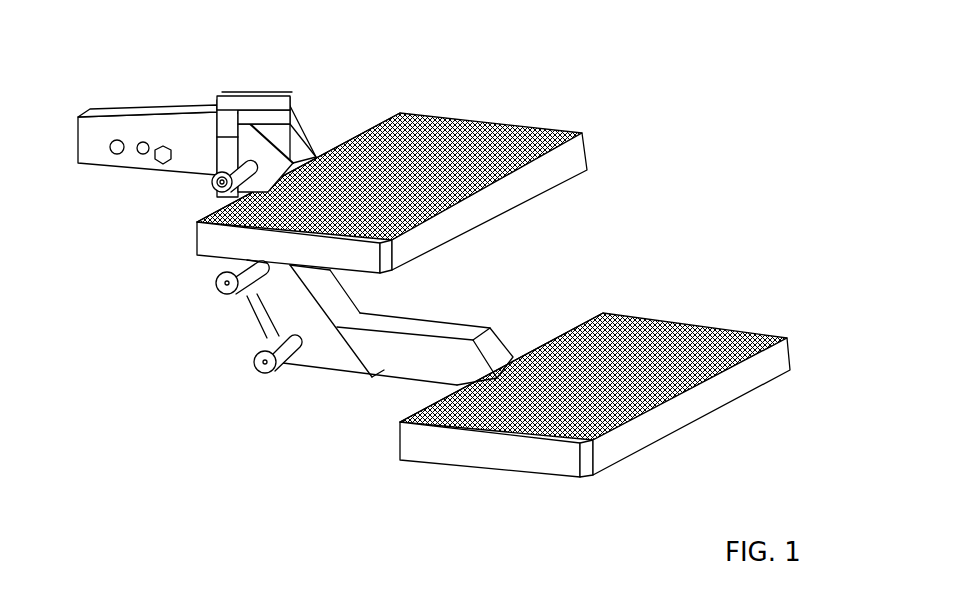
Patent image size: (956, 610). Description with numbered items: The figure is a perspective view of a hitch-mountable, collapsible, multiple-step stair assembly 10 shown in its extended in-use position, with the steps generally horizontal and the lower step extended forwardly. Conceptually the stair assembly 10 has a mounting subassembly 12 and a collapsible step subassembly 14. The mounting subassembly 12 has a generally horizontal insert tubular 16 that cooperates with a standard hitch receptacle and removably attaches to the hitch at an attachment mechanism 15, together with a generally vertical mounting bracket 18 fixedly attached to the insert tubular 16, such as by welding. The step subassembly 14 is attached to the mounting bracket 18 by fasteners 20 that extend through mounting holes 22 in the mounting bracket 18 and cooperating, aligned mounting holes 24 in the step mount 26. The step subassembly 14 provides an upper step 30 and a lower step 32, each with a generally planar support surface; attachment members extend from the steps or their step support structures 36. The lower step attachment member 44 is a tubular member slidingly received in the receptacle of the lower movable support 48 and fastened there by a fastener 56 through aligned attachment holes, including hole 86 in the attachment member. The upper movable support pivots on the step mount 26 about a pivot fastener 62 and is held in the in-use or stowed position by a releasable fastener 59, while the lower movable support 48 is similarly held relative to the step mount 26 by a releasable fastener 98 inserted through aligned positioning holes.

The collapsible stair assembly 10 is at (445, 239).
The mounting subassembly 12 is at (249, 157).
The collapsible step subassembly 14 is at (504, 275).
The attachment mechanism 15 is at (140, 168).
The insert tubular 16 is at (134, 157).
The mounting bracket 18 is at (212, 115).
The fasteners 20 is at (215, 138).
The mounting holes 22 is at (238, 97).
The mounting holes 24 is at (262, 103).
The step mount 26 is at (279, 117).
The upper step 30 is at (417, 173).
The lower step 32 is at (619, 376).
The step support structures 36 is at (284, 112).
The lower step attachment member 44 is at (398, 311).
The lower movable support 48 is at (249, 314).
The fastener 56 is at (262, 372).
The fastener 59 is at (218, 185).
The pivot fastener 62 is at (218, 173).
The attachment hole 86 is at (379, 353).
The fastener 98 is at (223, 292).